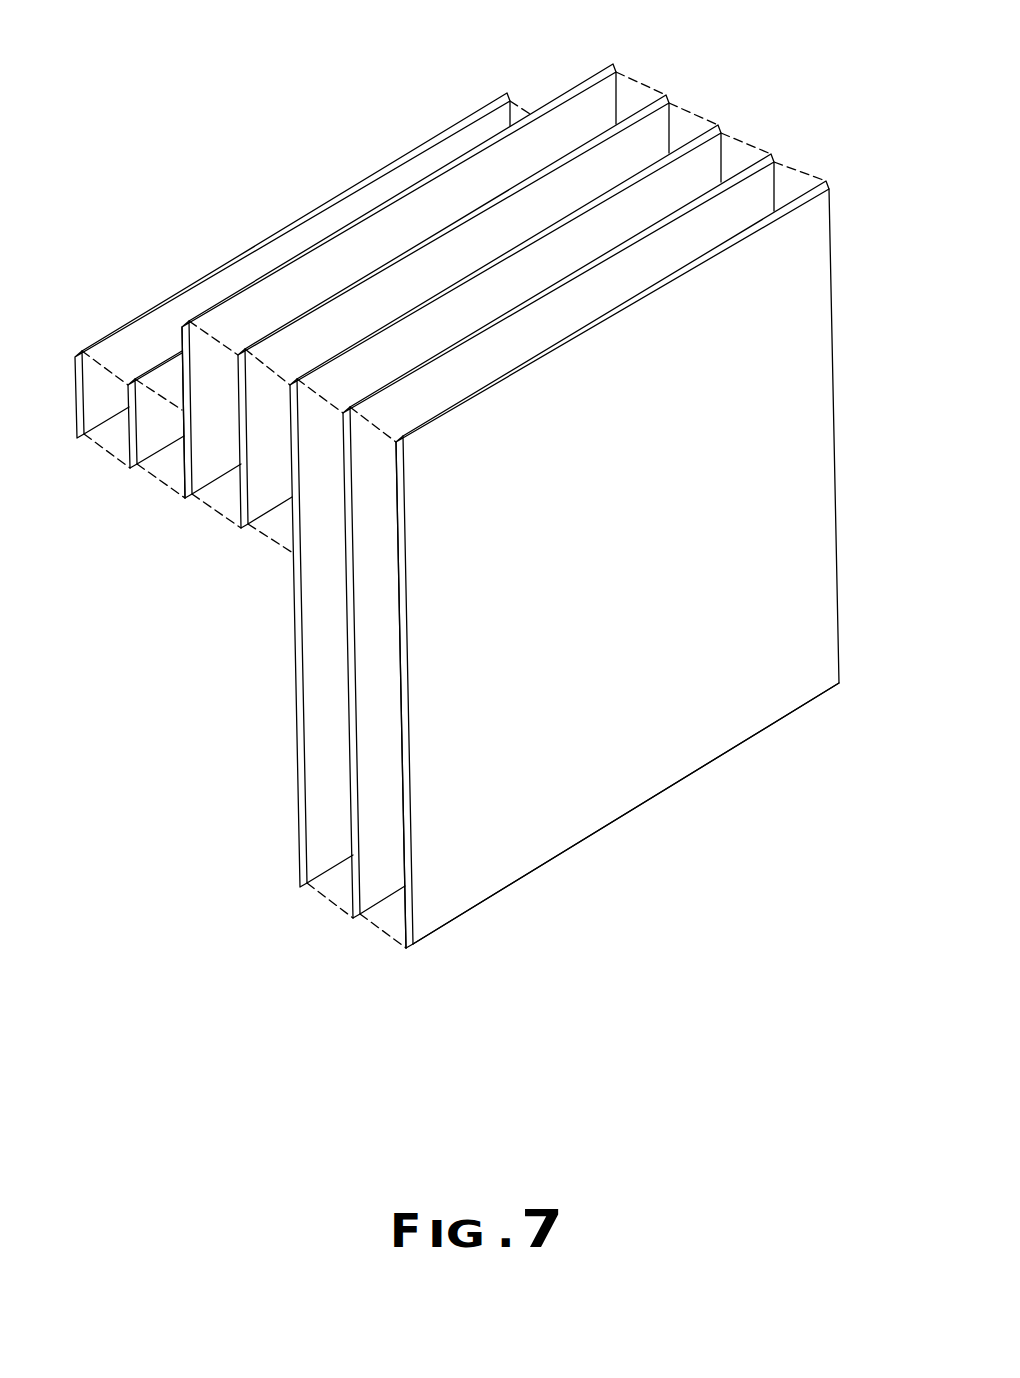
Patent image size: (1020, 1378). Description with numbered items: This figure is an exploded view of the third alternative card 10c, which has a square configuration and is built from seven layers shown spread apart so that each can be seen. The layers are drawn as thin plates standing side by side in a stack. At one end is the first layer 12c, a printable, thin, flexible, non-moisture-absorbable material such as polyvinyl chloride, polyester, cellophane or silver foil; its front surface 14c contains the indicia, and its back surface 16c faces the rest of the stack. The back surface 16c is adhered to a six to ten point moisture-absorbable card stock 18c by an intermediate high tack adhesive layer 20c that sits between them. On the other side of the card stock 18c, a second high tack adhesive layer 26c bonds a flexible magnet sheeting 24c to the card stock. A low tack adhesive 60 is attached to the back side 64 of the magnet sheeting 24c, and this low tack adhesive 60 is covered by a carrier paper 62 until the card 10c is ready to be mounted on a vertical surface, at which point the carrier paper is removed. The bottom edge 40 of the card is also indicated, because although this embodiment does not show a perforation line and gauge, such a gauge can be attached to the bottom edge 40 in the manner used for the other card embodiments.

The third alternative card 10c is at (837, 170).
The first layer 12c is at (408, 947).
The front surface 14c is at (780, 439).
The back surface 16c is at (398, 723).
The card stock 18c is at (300, 888).
The intermediate high tack adhesive layer 20c is at (353, 918).
The flexible magnet sheeting 24c is at (188, 497).
The high tack adhesive layer 26c is at (243, 527).
The bottom edge 40 is at (658, 795).
The low tack adhesive 60 is at (135, 466).
The carrier paper 62 is at (83, 438).
The back side 64 is at (180, 343).